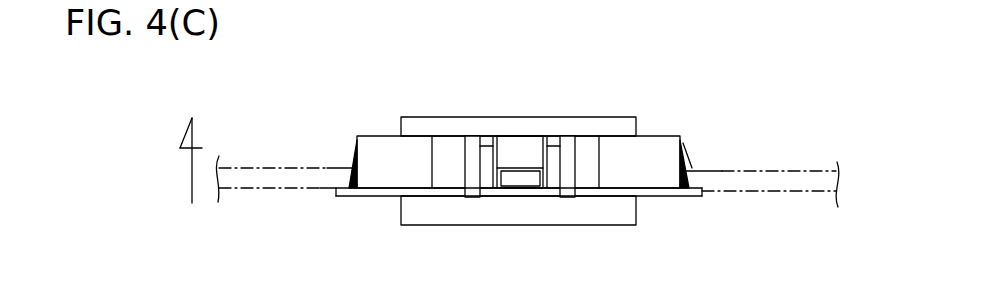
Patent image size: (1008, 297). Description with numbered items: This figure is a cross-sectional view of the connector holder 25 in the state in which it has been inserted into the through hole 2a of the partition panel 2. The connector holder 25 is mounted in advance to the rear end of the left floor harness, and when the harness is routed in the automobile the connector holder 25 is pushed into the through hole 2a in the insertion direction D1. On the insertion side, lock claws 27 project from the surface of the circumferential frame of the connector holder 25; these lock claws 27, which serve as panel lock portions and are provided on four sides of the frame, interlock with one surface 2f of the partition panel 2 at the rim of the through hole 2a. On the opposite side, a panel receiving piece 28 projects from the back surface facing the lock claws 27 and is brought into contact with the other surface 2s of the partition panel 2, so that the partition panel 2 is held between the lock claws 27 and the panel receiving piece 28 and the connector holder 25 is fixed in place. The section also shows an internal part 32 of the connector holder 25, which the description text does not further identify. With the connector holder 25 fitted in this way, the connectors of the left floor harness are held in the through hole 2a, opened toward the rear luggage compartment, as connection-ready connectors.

The insertion side D1 is at (203, 149).
The partition panel 2 is at (531, 171).
The through hole 2a is at (708, 177).
The other surface of the partition panel 2s is at (333, 189).
The surface of the partition panel 2f is at (347, 163).
The connector holder 25 is at (660, 122).
The lock claw 27 is at (690, 167).
The panel receiving piece 28 is at (702, 194).
The holder 32 is at (492, 197).